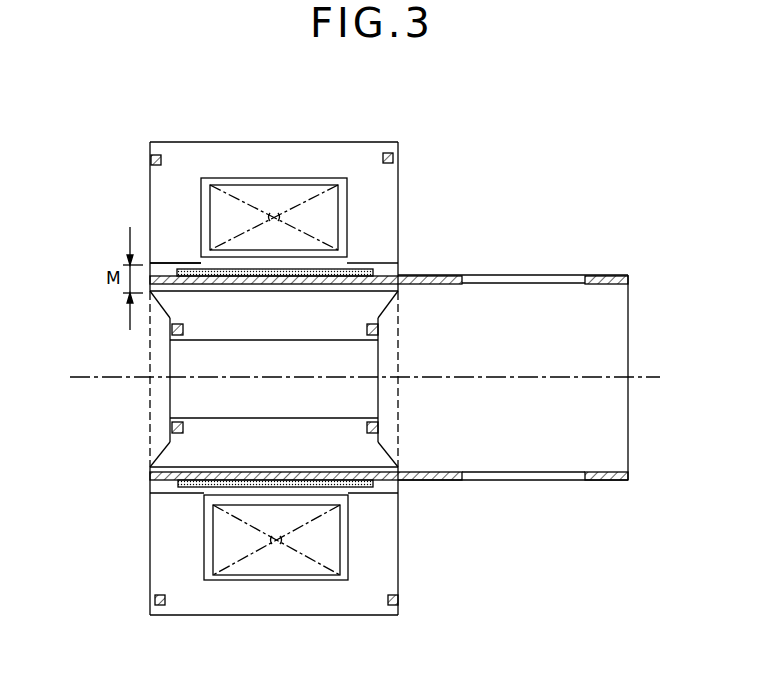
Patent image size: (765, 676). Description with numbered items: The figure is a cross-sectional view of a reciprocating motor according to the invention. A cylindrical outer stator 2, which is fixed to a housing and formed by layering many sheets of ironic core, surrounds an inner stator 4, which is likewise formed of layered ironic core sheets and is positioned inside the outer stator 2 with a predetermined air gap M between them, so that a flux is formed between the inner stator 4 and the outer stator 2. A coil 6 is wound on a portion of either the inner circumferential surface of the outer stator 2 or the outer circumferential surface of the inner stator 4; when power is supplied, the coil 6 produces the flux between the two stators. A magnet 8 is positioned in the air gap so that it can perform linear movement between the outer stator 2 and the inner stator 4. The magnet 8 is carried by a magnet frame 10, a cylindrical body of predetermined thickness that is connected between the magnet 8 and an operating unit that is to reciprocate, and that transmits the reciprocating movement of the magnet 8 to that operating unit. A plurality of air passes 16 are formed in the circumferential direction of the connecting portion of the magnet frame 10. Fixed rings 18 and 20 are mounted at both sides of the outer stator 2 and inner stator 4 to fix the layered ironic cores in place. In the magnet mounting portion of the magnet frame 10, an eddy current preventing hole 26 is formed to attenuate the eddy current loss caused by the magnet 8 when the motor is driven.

The outer stator 2 is at (246, 153).
The inner stator 4 is at (187, 310).
The coil 6 is at (330, 205).
The magnet 8 is at (372, 268).
The magnet frame 10 is at (410, 277).
The air pass 16 is at (552, 276).
The fixed ring 18 is at (394, 152).
The fixed ring 20 is at (400, 598).
The eddy current preventing hole 26 is at (200, 262).